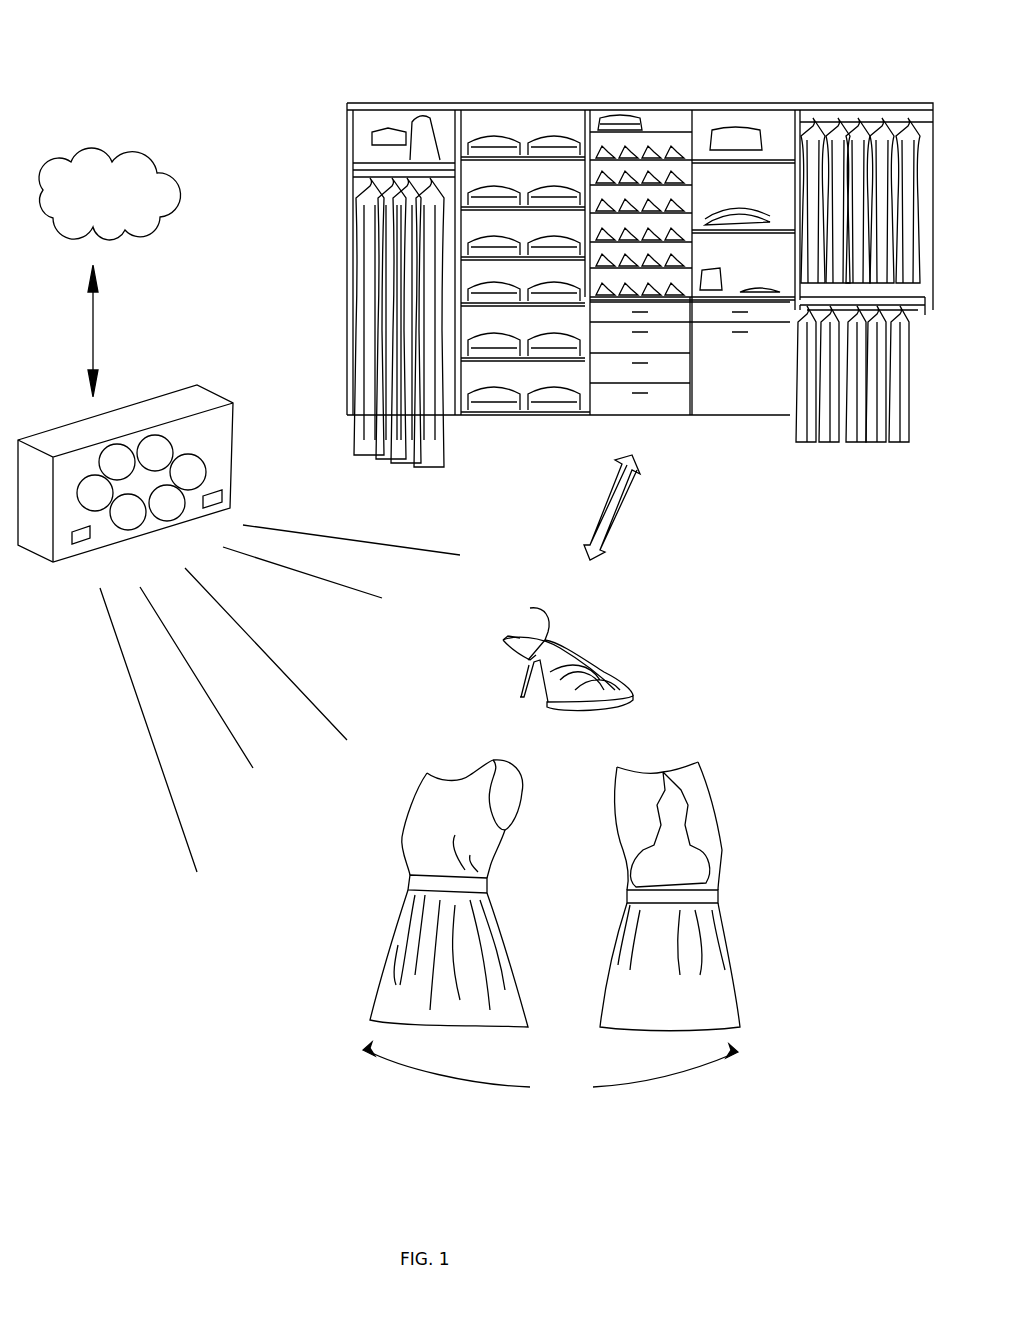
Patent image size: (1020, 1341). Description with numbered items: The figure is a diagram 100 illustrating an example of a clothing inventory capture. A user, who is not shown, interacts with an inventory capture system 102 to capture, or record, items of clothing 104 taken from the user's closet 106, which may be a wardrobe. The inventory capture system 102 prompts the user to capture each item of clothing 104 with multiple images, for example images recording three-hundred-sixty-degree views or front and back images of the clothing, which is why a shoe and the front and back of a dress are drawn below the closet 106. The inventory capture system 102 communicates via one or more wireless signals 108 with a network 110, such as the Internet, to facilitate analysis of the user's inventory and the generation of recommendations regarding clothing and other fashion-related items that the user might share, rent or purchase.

The diagram 100 is at (171, 58).
The inventory capture system 102 is at (235, 447).
The items of clothing 104 is at (733, 765).
The closet 106 is at (640, 98).
The wireless signals 108 is at (94, 340).
The network 110 is at (110, 194).